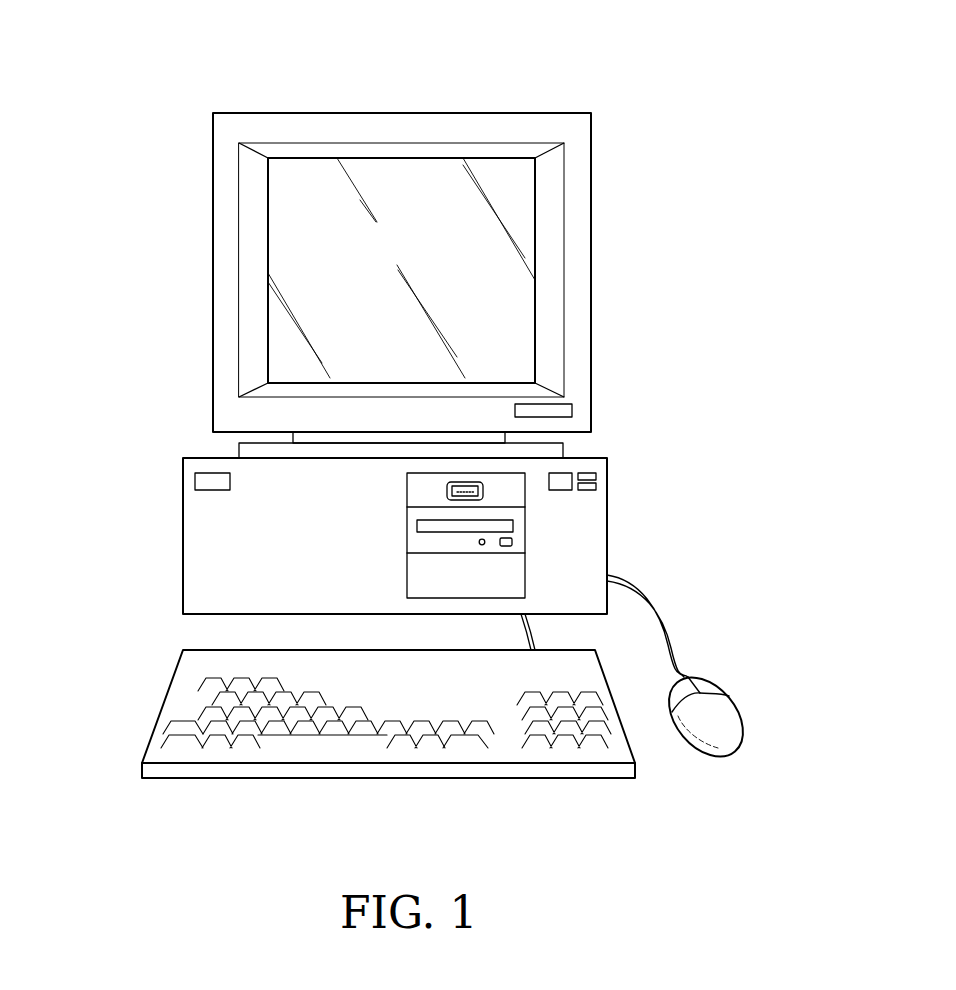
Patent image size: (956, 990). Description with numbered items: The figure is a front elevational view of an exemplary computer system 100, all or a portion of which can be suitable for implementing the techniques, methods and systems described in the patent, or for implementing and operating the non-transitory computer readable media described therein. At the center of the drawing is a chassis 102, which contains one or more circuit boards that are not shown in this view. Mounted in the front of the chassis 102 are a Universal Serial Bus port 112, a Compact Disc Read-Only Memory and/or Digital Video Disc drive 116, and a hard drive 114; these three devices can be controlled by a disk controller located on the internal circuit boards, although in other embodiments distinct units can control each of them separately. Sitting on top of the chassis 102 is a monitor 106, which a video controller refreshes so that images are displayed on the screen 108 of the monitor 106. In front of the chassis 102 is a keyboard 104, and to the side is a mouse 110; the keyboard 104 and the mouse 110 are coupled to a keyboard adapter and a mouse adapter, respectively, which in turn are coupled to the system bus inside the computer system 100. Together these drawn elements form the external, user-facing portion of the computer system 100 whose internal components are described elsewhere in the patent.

The computer system 100 is at (583, 88).
The chassis 102 is at (183, 540).
The keyboard 104 is at (165, 700).
The monitor 106 is at (288, 112).
The screen 108 is at (317, 275).
The mouse 110 is at (725, 707).
The Universal Serial Bus (USB) port 112 is at (485, 487).
The hard drive 114 is at (515, 573).
The CD-ROM and/or DVD drive 116 is at (515, 531).